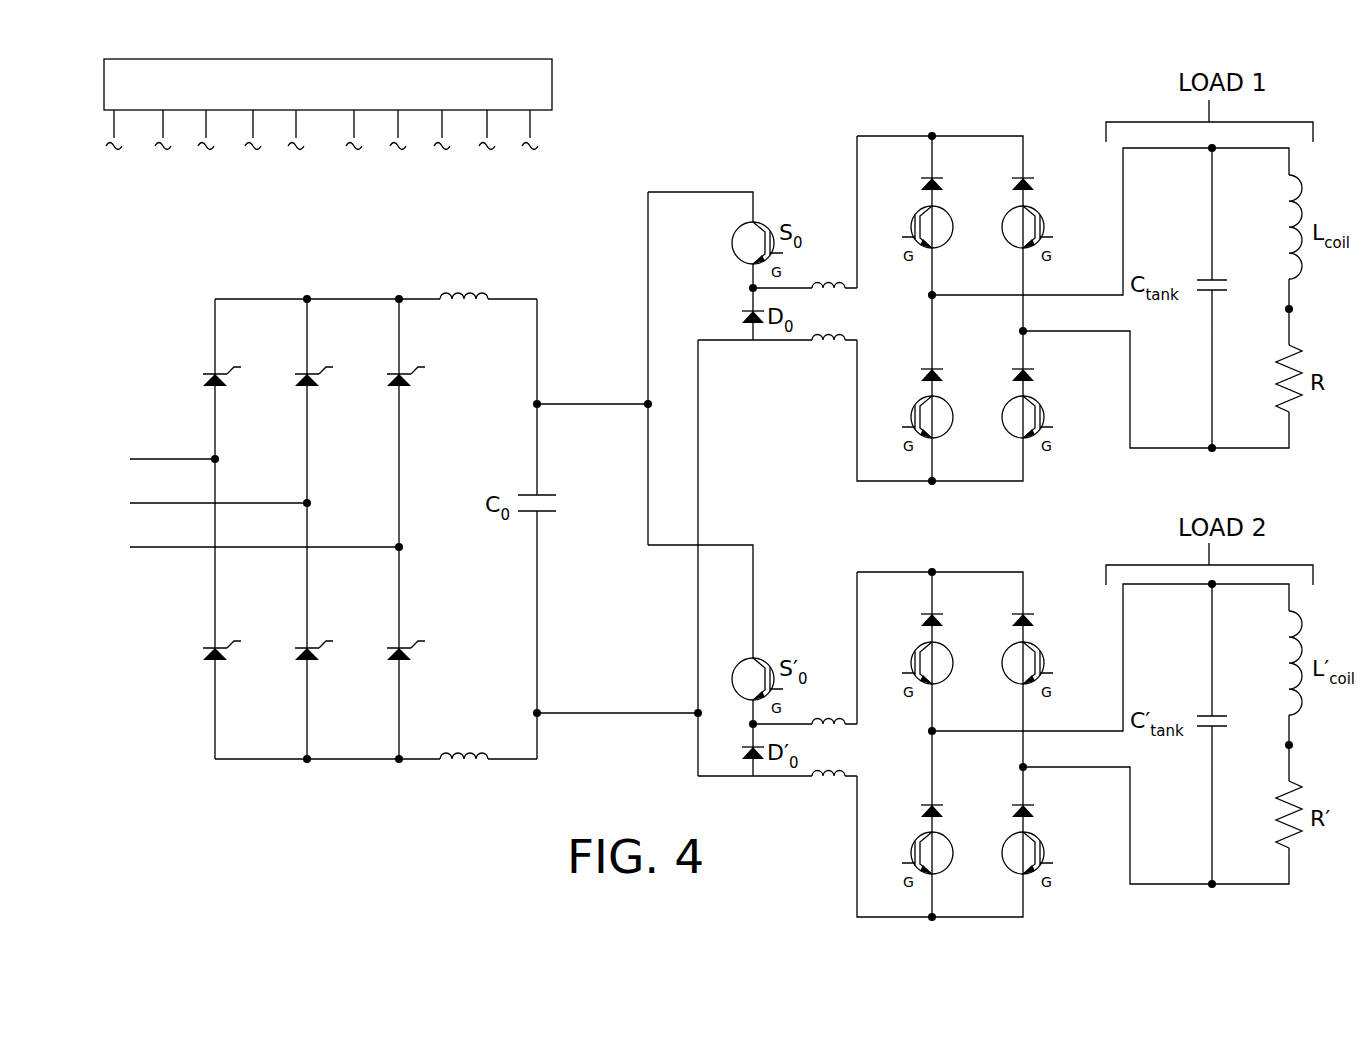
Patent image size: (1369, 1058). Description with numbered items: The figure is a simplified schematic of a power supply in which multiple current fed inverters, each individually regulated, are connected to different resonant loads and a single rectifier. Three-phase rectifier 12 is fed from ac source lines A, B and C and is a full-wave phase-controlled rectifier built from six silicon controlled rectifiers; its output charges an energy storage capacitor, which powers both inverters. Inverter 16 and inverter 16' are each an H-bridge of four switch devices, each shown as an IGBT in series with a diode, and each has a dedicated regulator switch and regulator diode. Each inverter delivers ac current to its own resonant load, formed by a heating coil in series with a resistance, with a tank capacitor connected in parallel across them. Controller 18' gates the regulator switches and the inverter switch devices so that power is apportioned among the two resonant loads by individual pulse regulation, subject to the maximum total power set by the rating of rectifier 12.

The three-phase rectifier 12 is at (200, 282).
The inverter 16 is at (968, 272).
The inverter 16' is at (968, 708).
The controller 18' is at (368, 121).